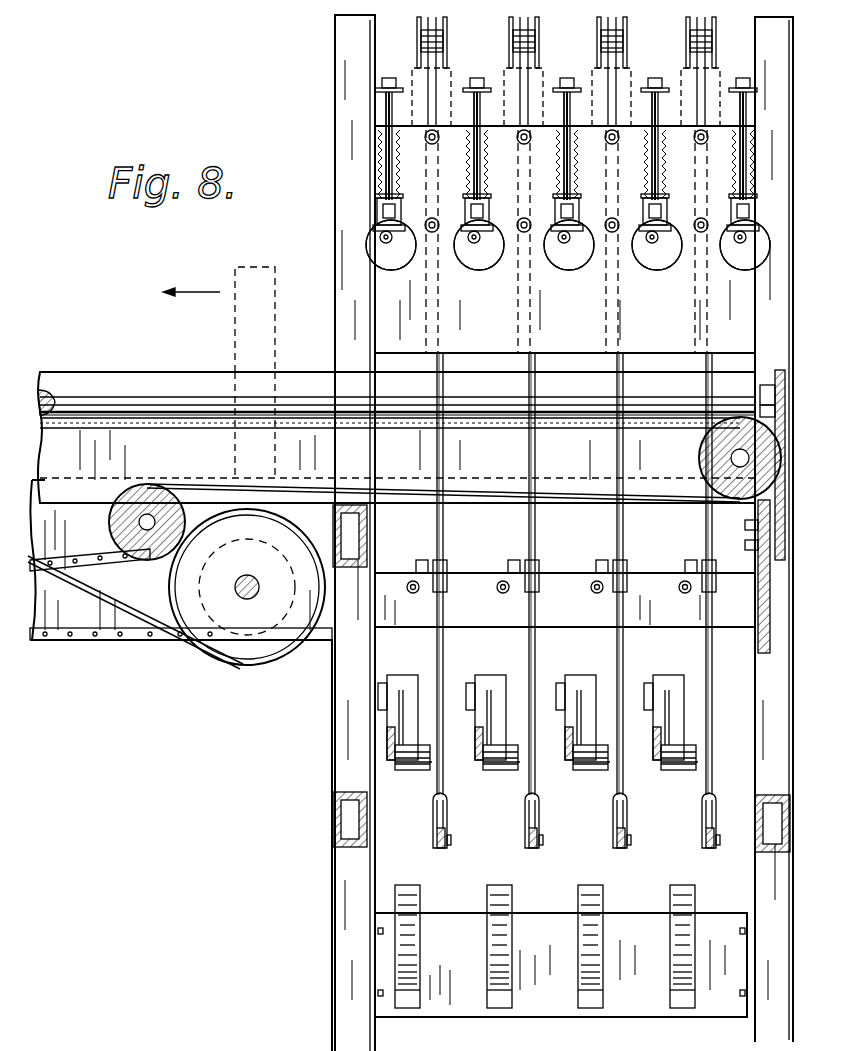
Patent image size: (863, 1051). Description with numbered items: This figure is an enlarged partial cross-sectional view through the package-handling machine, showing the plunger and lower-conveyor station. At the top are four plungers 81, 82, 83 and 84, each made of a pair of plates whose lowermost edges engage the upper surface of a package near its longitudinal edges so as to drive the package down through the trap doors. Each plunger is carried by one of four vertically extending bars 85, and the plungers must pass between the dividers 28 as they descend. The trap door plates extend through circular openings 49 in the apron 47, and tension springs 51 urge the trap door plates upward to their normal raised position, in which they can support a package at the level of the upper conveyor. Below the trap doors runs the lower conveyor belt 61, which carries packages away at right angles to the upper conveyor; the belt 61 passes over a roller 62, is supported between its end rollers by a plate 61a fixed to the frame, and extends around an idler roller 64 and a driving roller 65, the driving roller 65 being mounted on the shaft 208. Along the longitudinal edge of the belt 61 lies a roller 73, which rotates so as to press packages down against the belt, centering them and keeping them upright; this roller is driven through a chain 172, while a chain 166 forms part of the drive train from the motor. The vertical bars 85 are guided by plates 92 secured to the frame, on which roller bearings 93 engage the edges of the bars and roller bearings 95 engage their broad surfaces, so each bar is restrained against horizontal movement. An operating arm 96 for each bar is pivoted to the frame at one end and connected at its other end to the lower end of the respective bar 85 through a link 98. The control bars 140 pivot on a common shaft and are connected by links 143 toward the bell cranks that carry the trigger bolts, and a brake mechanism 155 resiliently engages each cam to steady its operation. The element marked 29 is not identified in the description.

The dividers 28 is at (477, 78).
The bolt shaft 29 is at (474, 107).
The apron 47 is at (565, 239).
The circular openings 49 is at (400, 268).
The tension springs 51 is at (375, 166).
The conveyor belt 61 is at (224, 420).
The plate 61a is at (254, 428).
The roller 62 is at (700, 450).
The idler roller 64 is at (150, 486).
The driving roller 65 is at (256, 660).
The roller 73 is at (172, 372).
The plunger 81 is at (715, 55).
The plunger 82 is at (627, 55).
The plunger 83 is at (538, 55).
The plunger 84 is at (417, 58).
The vertically extending bars 85 is at (420, 516).
The plates 92 is at (565, 600).
The roller bearings 93 is at (518, 564).
The roller bearings 95 is at (408, 582).
The operating arm 96 is at (386, 724).
The links 98 is at (410, 772).
The control bars 140 is at (530, 850).
The links 143 is at (626, 641).
The brake mechanism 155 is at (485, 932).
The chain 166 is at (758, 600).
The chain 172 is at (779, 370).
The shaft 208 is at (243, 600).